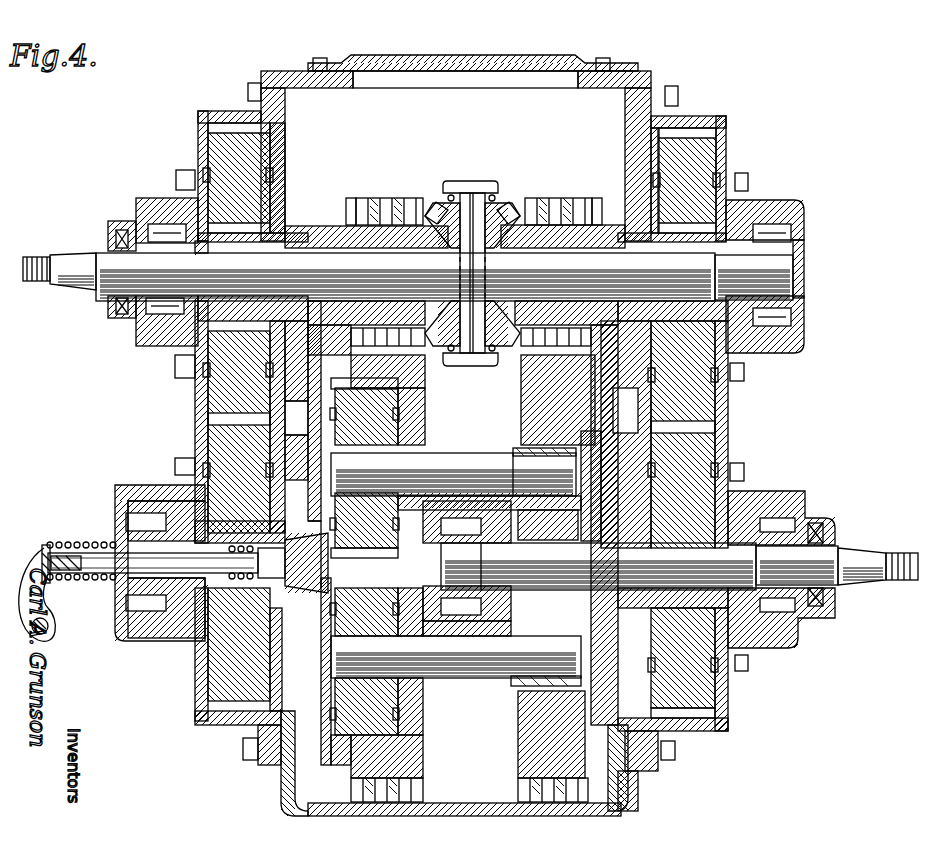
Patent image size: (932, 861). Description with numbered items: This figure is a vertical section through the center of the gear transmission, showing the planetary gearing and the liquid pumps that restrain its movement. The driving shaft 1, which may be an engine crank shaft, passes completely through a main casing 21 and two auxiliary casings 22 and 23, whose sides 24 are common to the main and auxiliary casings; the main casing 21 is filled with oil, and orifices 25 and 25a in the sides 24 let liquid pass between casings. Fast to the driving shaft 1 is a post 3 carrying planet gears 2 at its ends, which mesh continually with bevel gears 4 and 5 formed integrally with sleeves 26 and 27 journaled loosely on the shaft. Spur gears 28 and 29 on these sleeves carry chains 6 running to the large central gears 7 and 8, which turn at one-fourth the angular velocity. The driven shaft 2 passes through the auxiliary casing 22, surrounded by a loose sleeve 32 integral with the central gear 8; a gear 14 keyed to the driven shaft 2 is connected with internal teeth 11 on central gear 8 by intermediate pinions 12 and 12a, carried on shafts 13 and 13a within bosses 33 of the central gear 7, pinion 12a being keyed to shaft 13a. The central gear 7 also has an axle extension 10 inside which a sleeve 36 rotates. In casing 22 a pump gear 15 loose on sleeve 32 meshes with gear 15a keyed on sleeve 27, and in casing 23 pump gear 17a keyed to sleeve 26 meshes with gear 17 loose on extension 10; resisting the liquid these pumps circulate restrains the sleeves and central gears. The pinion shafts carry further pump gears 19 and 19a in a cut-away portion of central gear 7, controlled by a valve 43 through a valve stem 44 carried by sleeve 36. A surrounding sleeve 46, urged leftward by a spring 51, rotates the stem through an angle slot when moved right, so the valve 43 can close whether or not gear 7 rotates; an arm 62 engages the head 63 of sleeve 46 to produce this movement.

The driving shaft 1 is at (60, 252).
The planet gears 2 is at (845, 555).
The post 3 is at (466, 185).
The bevel gear 4 is at (425, 200).
The bevel gear 5 is at (503, 202).
The chains 6 is at (384, 190).
The central gear 7 is at (405, 362).
The central gear 8 is at (520, 376).
The axle extension 10 is at (290, 540).
The internal teeth 11 is at (525, 435).
The intermediate pinion 12 is at (510, 675).
The intermediate pinion 12a is at (520, 440).
The shaft 13 is at (465, 655).
The shaft 13a is at (441, 455).
The gear 14 is at (540, 530).
The pump gear 15 is at (692, 435).
The pump gear 15a is at (700, 150).
The pump gear 17 is at (200, 425).
The pump gear 17a is at (203, 143).
The pump gear 19 is at (380, 695).
The pump gear 19a is at (378, 398).
The main casing 21 is at (552, 52).
The auxiliary casing 22 is at (690, 110).
The auxiliary casing 23 is at (212, 103).
The sides 24 is at (277, 143).
The orifice 25 is at (615, 355).
The orifice 25a is at (319, 382).
The sleeve 26 is at (318, 225).
The sleeve 27 is at (588, 225).
The spur gear 28 is at (343, 205).
The spur gear 29 is at (560, 210).
The loose sleeve 32 is at (722, 518).
The bosses 33 is at (430, 443).
The sleeve 36 is at (180, 610).
The valve 43 is at (300, 580).
The valve stem 44 is at (100, 568).
The sleeve 46 is at (66, 536).
The spring 51 is at (84, 535).
The arm 62 is at (30, 598).
The head 63 is at (38, 537).